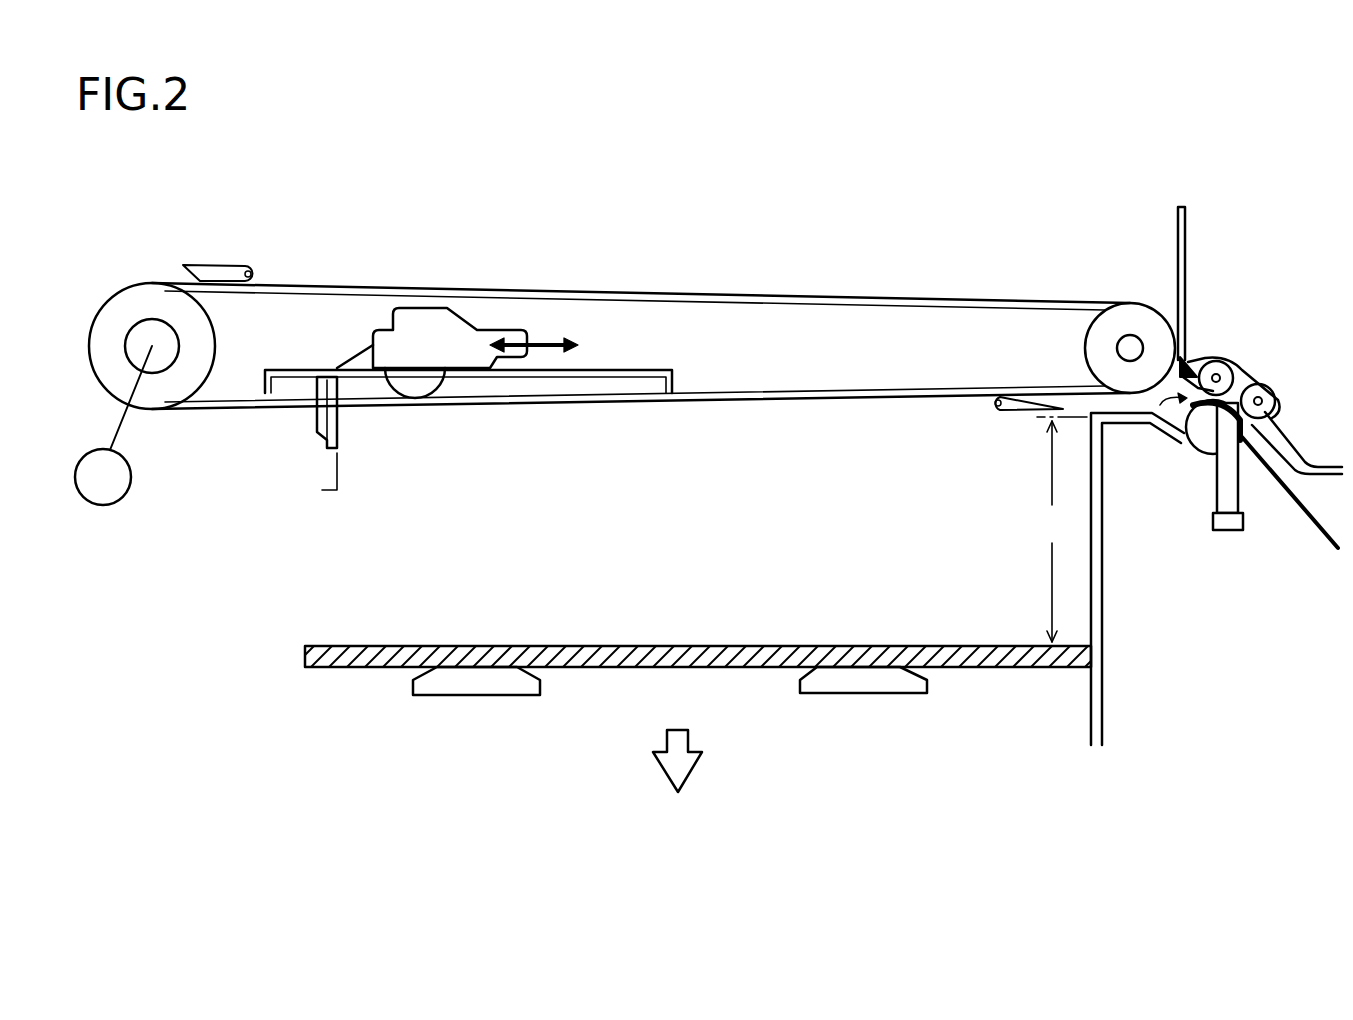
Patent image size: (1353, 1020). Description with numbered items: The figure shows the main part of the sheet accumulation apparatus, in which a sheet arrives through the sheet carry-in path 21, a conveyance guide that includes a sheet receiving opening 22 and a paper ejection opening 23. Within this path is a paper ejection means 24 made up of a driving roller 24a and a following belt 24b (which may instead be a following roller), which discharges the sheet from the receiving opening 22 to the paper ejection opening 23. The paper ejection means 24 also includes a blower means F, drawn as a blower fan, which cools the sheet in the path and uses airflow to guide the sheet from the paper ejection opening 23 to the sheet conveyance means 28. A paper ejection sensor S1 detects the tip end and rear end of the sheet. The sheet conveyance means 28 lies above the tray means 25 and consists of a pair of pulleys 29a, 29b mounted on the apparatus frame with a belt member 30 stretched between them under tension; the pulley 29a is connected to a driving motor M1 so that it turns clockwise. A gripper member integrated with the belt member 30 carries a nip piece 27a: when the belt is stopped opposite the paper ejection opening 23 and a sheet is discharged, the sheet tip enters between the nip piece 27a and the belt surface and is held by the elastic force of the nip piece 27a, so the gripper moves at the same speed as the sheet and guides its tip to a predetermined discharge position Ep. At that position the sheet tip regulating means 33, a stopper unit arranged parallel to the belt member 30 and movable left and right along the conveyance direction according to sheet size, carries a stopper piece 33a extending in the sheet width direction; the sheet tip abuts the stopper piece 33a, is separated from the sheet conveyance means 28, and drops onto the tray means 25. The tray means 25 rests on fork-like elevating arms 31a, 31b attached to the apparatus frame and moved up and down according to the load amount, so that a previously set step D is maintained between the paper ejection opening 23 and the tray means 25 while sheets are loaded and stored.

The belt member 30 is at (608, 291).
The pulley 29a is at (137, 308).
The pulley 29b is at (1125, 317).
The driving motor M1 is at (113, 425).
The nip piece 27a is at (218, 264).
The sheet conveyance means 28 is at (850, 285).
The sheet tip regulating means 33 is at (413, 325).
The stopper piece 33a is at (328, 422).
The discharge position Ep is at (318, 477).
The paper ejection sensor S1 is at (1190, 360).
The paper ejection means 24 is at (1246, 399).
The driving roller 24a is at (1203, 447).
The following belt 24b is at (1268, 385).
The blower means F is at (1213, 500).
The sheet receiving opening 22 is at (1270, 430).
The sheet carry-in path 21 is at (1320, 502).
The paper ejection opening 23 is at (1158, 416).
The step D is at (1062, 529).
The tray means 25 is at (597, 650).
The elevating arm 31a is at (865, 684).
The elevating arm 31b is at (457, 687).